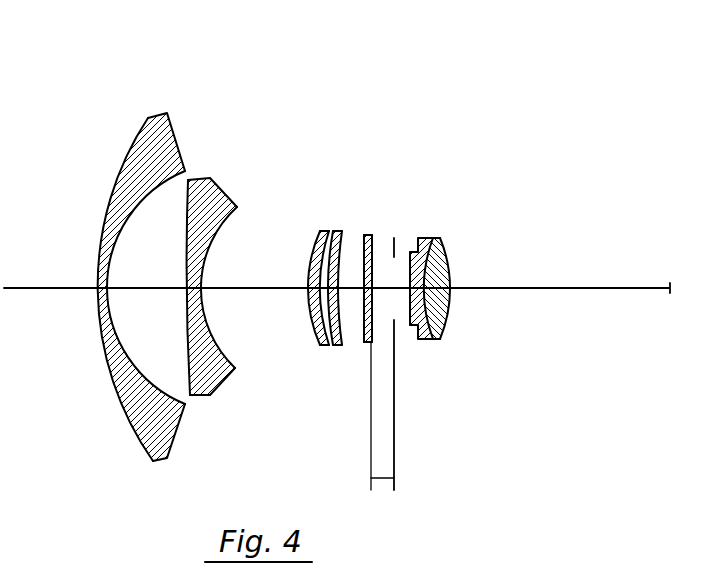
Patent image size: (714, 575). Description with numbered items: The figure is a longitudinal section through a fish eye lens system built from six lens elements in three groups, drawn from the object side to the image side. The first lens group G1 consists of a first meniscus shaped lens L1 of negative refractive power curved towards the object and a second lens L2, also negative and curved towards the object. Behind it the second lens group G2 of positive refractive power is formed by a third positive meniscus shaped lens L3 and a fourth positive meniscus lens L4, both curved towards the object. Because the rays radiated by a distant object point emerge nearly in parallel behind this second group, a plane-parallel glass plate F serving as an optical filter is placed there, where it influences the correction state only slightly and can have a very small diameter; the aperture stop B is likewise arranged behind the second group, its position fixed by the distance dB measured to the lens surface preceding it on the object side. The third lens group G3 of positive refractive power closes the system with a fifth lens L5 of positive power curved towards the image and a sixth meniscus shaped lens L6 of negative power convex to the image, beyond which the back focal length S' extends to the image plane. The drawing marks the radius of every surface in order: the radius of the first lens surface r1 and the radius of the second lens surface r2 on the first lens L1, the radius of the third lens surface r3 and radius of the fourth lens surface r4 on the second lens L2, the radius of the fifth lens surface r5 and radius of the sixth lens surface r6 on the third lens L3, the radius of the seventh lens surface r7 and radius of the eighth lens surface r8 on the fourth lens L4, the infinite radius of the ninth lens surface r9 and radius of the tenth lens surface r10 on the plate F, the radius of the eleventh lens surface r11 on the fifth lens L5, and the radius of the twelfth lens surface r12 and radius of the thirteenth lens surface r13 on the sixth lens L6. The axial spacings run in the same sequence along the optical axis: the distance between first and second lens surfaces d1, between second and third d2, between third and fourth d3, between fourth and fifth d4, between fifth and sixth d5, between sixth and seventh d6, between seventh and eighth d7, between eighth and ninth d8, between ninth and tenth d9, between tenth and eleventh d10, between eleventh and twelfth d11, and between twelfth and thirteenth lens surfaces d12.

The first lens group G1 is at (263, 58).
The second lens group G2 is at (345, 76).
The third lens group G3 is at (535, 78).
The first lens L1 is at (158, 116).
The second lens L2 is at (213, 180).
The third lens L3 is at (321, 230).
The fourth lens L4 is at (338, 229).
The fifth lens L5 is at (418, 238).
The sixth lens L6 is at (442, 238).
The plane-parallel glass plate F is at (368, 234).
The aperture stop B is at (394, 237).
The back focal length S' is at (570, 264).
The radius of first lens surface r1 is at (132, 141).
The radius of second lens surface r2 is at (172, 142).
The radius of third lens surface r3 is at (188, 186).
The radius of fourth lens surface r4 is at (240, 228).
The radius of fifth lens surface r5 is at (321, 233).
The radius of sixth lens surface r6 is at (330, 230).
The radius of seventh lens surface r7 is at (335, 230).
The radius of eighth lens surface r8 is at (342, 231).
The radius of ninth lens surface r9 is at (364, 234).
The radius of tenth lens surface r10 is at (373, 234).
The radius of eleventh lens surface r11 is at (411, 250).
The radius of twelfth lens surface r12 is at (432, 238).
The radius of thirteenth lens surface r13 is at (452, 268).
The distance between first and second lens surfaces d1 is at (99, 318).
The distance between second and third lens surfaces d2 is at (148, 288).
The distance between third and fourth lens surfaces d3 is at (202, 290).
The distance between fourth and fifth lens surfaces d4 is at (262, 290).
The distance between fifth and sixth lens surfaces d5 is at (310, 300).
The distance between sixth and seventh lens surfaces d6 is at (321, 330).
The distance between seventh and eighth lens surfaces d7 is at (345, 330).
The distance between eighth and ninth lens surfaces d8 is at (358, 330).
The distance between ninth and tenth lens surfaces d9 is at (370, 350).
The distance between tenth and eleventh lens surfaces d10 is at (405, 330).
The distance between eleventh and twelfth lens surfaces d11 is at (430, 330).
The distance between twelfth and thirteenth lens surfaces d12 is at (452, 330).
The distance between aperture stop and preceding lens surface dB is at (383, 478).